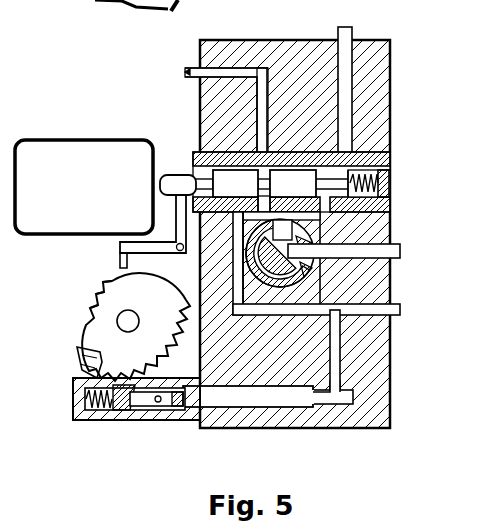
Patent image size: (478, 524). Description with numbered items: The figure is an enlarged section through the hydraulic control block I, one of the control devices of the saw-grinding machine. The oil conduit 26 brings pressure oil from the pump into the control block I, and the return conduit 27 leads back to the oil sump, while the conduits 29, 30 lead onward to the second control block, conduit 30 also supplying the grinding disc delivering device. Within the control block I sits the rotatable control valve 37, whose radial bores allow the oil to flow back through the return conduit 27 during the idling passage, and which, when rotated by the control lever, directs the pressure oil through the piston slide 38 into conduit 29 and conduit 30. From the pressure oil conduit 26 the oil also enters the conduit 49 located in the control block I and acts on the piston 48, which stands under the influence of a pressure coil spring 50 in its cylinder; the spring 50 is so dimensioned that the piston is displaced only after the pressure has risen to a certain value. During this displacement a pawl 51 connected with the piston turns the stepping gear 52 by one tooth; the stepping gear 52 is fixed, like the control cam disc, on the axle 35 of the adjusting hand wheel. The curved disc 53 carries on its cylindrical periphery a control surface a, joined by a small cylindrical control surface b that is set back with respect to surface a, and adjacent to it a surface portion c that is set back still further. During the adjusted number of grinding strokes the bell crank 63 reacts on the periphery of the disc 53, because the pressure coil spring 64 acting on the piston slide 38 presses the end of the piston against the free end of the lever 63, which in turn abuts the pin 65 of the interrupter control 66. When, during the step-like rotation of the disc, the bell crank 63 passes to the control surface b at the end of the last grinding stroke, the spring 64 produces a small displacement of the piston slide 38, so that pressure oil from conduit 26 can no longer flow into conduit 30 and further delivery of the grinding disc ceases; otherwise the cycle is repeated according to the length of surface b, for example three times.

The hydraulic control block I is at (375, 80).
The oil conduit 26 is at (401, 254).
The return conduit 27 is at (399, 316).
The conduit 29 is at (343, 26).
The conduit 30 is at (184, 71).
The axle 35 is at (125, 331).
The control valve 37 is at (322, 283).
The piston slide 38 is at (296, 184).
The piston 48 is at (346, 362).
The conduit 49 is at (272, 396).
The pressure coil spring 50 is at (93, 409).
The pawl 51 is at (140, 419).
The stepping gear 52 is at (96, 349).
The curved disc 53 is at (101, 327).
The bell crank 63 is at (152, 245).
The pressure coil spring 64 is at (384, 183).
The pin 65 is at (166, 180).
The interrupter control 66 is at (35, 156).
The control surface a is at (108, 270).
The control surface b is at (97, 291).
The surface portion c is at (92, 308).